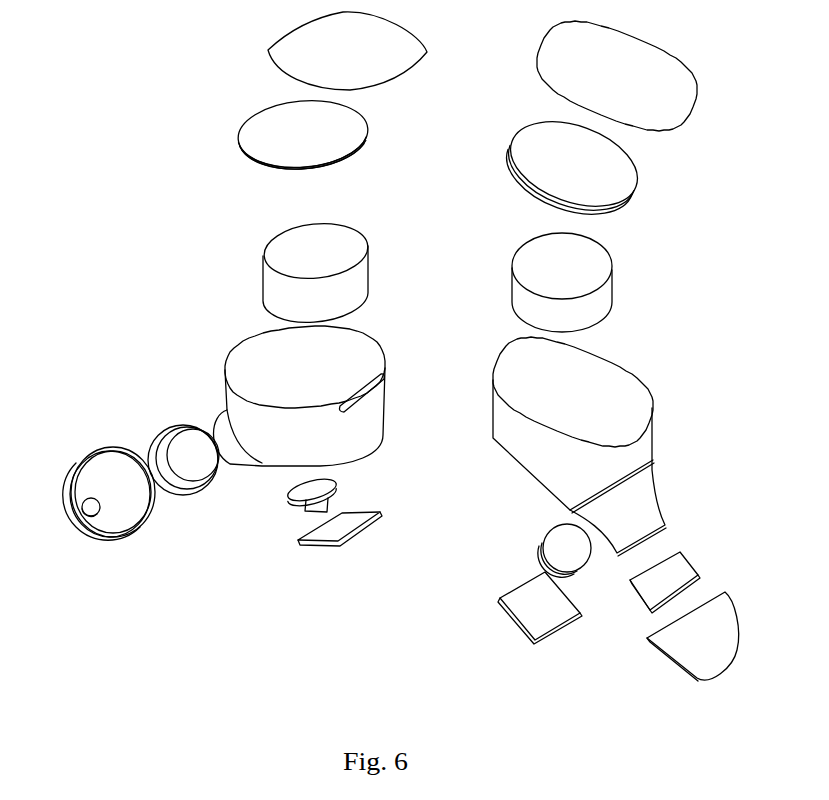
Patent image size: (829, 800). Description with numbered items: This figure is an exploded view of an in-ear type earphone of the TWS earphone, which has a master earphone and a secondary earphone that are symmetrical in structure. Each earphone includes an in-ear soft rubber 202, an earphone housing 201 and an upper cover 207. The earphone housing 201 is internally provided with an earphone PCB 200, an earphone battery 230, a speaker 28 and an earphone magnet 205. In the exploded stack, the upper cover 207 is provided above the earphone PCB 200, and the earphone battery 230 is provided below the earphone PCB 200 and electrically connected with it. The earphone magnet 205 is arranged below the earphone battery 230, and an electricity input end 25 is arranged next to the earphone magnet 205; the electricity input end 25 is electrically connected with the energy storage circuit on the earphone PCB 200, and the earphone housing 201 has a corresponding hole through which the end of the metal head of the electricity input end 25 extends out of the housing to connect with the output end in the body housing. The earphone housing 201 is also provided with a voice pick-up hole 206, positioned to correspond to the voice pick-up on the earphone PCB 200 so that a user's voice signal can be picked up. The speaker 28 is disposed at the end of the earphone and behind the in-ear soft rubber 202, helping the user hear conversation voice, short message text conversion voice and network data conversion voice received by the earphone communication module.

The upper cover 207 is at (300, 47).
The earphone PCB 200 is at (330, 133).
The earphone battery 230 is at (282, 288).
The earphone housing 201 is at (237, 398).
The voice pick-up hole 206 is at (380, 365).
The speaker 28 is at (166, 440).
The in-ear soft rubber 202 is at (68, 480).
The electricity input end 25 is at (293, 510).
The earphone magnet 205 is at (340, 543).